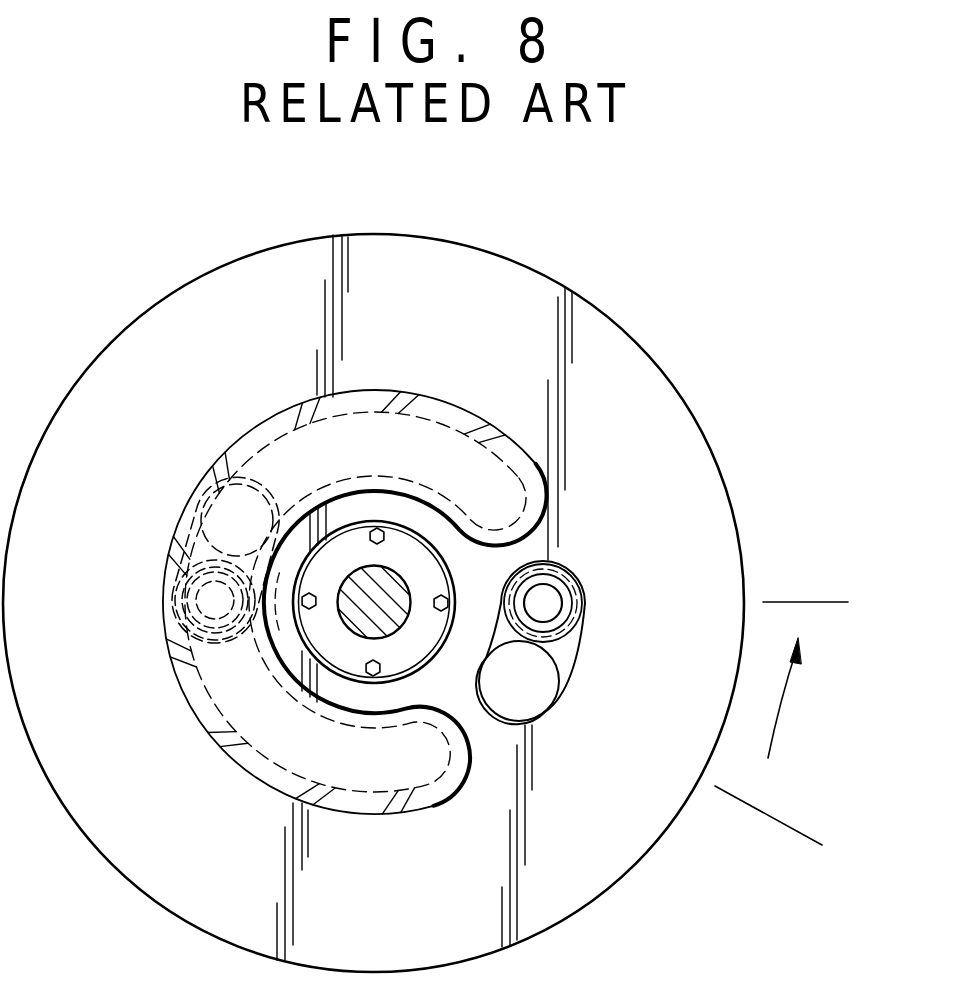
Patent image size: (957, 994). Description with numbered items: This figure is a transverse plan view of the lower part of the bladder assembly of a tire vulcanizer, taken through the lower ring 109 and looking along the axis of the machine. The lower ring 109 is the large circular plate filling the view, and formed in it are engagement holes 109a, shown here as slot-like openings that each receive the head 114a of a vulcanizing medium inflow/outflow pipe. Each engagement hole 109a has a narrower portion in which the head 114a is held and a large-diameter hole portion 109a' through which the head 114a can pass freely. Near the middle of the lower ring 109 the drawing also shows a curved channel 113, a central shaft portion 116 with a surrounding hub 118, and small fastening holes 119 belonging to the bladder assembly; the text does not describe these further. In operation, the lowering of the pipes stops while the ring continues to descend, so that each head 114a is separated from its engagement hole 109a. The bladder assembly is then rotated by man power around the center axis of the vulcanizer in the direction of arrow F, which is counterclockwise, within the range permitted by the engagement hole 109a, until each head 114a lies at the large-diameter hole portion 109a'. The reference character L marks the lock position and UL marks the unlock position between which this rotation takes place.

The lower ring 109 is at (597, 320).
The engagement hole 109a is at (421, 557).
The eccentric roller 109a' is at (552, 717).
The cam groove 113 is at (260, 773).
The head 114a is at (580, 590).
The drive shaft 116 is at (400, 598).
The hub 118 is at (398, 654).
The bolt hole 119 is at (377, 528).
The lock position L is at (826, 602).
The arrow F is at (785, 716).
The unlock position UL is at (782, 823).